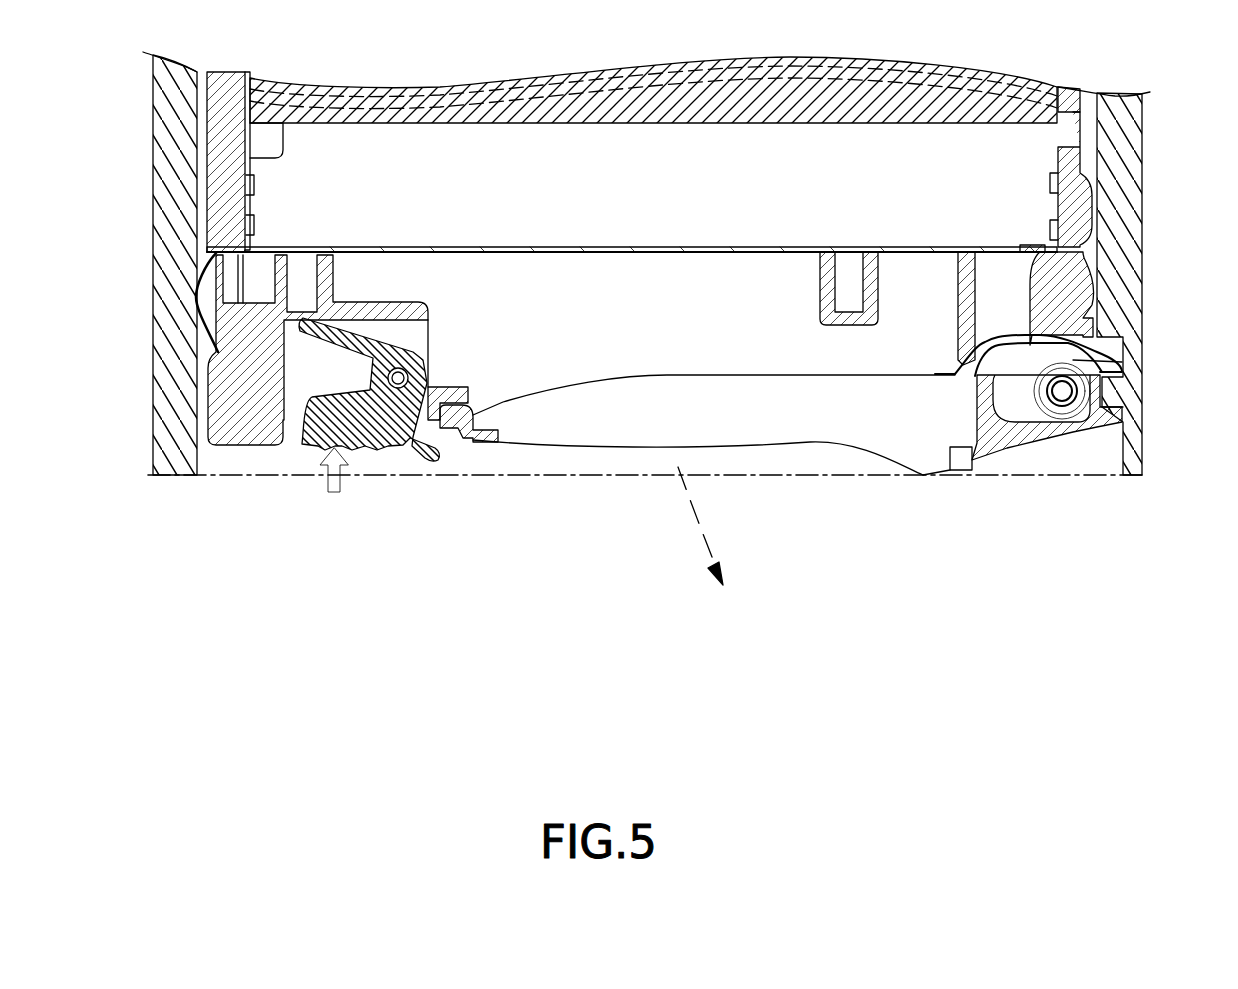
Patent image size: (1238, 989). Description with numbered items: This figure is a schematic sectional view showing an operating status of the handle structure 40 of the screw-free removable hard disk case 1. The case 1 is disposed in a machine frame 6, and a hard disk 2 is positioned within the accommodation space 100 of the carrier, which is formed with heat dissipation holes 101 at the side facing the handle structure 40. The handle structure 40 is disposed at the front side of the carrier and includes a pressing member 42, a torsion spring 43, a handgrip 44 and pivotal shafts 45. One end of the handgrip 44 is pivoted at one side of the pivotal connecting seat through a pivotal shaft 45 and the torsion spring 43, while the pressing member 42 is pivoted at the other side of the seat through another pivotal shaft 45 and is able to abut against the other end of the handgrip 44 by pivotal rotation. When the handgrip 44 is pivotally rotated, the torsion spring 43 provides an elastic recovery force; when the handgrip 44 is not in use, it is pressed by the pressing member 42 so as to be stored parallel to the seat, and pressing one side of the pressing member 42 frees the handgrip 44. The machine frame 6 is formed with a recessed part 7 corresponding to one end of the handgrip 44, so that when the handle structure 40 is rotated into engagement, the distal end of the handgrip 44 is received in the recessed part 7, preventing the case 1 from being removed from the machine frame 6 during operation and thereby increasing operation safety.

The screw-free removable hard disk case 1 is at (207, 143).
The hard disk 2 is at (247, 103).
The machine frame 6 is at (1125, 218).
The recessed part 7 is at (1107, 343).
The handle structure 40 is at (232, 447).
The pressing member 42 is at (307, 437).
The torsion spring 43 is at (1122, 362).
The handgrip 44 is at (470, 436).
The pivotal shaft 45 is at (396, 388).
The accommodation space 100 is at (550, 178).
The heat dissipation holes 101 is at (460, 250).